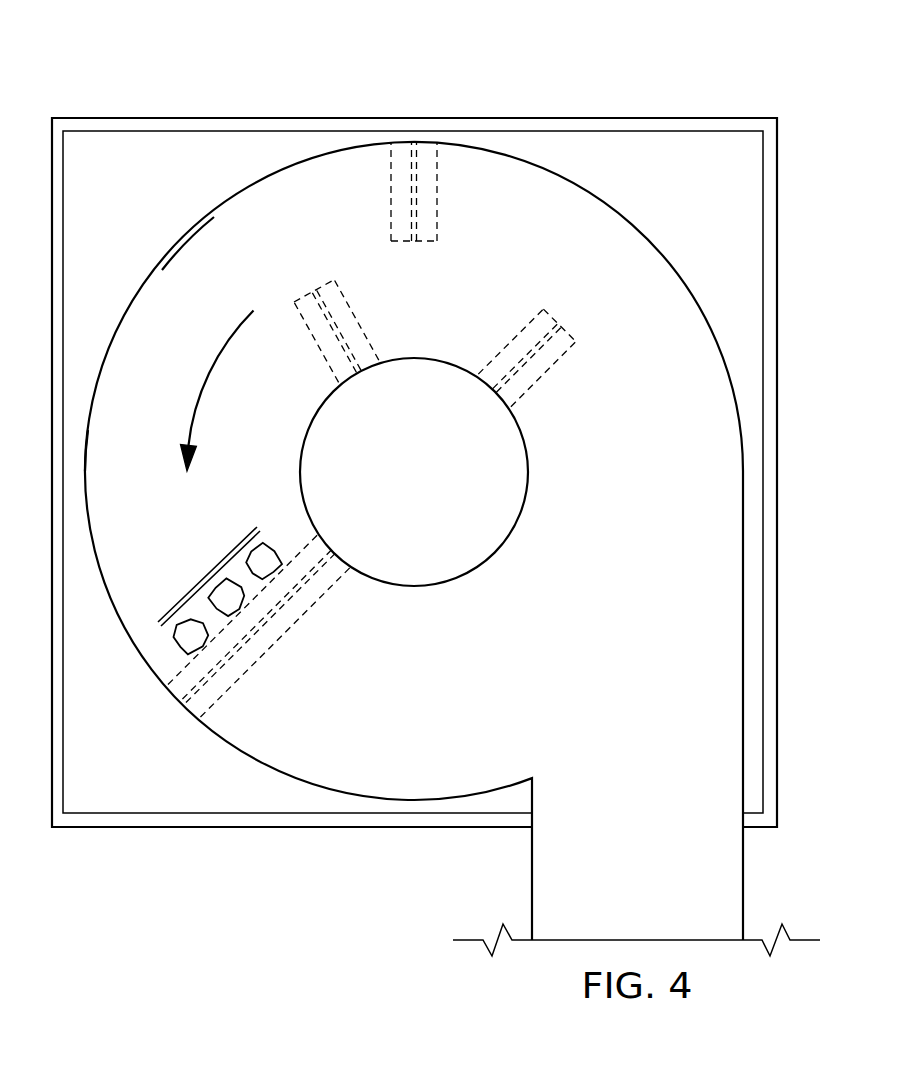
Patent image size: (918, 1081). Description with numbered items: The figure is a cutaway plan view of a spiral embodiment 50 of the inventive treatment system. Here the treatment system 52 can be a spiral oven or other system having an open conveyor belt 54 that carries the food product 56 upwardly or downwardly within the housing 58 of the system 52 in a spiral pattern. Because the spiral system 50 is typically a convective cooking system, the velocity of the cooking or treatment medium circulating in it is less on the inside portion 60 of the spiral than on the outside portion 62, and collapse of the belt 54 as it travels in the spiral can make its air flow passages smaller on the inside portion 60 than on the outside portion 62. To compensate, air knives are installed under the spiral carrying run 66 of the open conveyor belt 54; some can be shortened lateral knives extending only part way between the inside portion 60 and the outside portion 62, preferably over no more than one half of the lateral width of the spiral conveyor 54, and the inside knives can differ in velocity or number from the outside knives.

The spiral embodiment 50 is at (148, 86).
The treatment system 52 is at (597, 118).
The open conveyor belt 54 is at (200, 217).
The food product 56 is at (209, 573).
The housing 58 is at (412, 128).
The inside portion 60 is at (298, 472).
The outside portion 62 is at (88, 470).
The spiral carrying run 66 is at (162, 270).